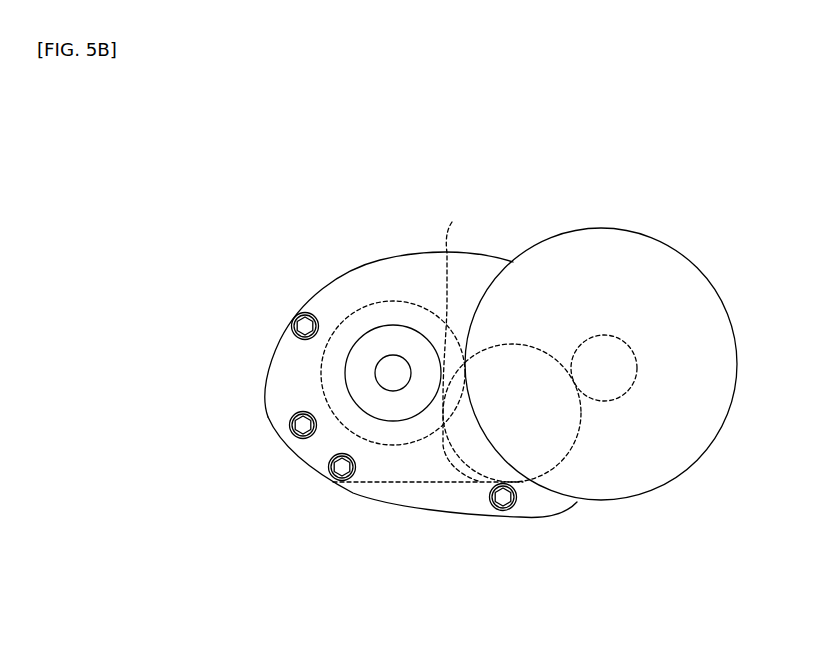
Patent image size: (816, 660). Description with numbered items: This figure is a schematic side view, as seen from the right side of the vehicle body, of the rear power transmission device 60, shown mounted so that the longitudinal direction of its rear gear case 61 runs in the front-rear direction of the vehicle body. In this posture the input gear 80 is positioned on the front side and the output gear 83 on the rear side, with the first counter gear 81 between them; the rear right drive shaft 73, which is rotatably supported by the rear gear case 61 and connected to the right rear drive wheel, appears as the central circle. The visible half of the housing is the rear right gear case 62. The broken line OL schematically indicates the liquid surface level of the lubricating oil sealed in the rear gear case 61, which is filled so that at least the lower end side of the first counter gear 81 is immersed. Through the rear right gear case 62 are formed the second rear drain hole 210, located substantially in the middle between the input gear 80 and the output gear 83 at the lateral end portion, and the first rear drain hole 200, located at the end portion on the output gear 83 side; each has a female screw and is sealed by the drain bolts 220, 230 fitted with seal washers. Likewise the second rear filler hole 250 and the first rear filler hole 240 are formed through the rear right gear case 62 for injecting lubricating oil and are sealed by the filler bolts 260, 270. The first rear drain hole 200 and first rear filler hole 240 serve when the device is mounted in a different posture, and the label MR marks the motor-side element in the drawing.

The rear power transmission device 60 is at (393, 365).
The rear gear case 61 is at (427, 243).
The rear right gear case 62 is at (421, 494).
The rear right drive shaft 73 is at (389, 368).
The input gear 80 is at (623, 336).
The first counter gear 81 is at (583, 413).
The output gear 83 is at (460, 341).
The first rear drain hole 200 is at (264, 344).
The drain bolt 220 is at (291, 324).
The first rear filler hole 240 is at (276, 473).
The filler bolt 260 is at (302, 440).
The second rear filler hole 250 is at (321, 523).
The filler bolt 270 is at (345, 481).
The second rear drain hole 210 is at (488, 560).
The drain bolt 230 is at (507, 511).
The liquid surface level OL is at (410, 488).
The motor rotation axis MR is at (590, 381).